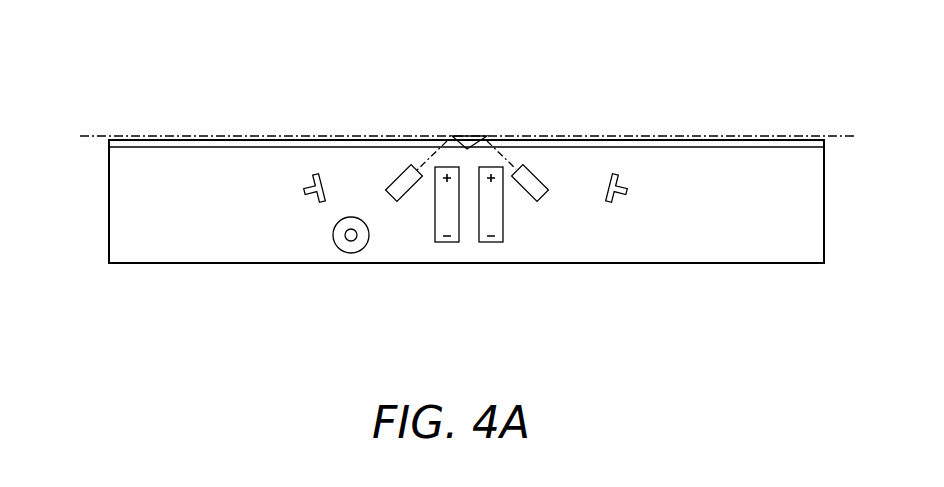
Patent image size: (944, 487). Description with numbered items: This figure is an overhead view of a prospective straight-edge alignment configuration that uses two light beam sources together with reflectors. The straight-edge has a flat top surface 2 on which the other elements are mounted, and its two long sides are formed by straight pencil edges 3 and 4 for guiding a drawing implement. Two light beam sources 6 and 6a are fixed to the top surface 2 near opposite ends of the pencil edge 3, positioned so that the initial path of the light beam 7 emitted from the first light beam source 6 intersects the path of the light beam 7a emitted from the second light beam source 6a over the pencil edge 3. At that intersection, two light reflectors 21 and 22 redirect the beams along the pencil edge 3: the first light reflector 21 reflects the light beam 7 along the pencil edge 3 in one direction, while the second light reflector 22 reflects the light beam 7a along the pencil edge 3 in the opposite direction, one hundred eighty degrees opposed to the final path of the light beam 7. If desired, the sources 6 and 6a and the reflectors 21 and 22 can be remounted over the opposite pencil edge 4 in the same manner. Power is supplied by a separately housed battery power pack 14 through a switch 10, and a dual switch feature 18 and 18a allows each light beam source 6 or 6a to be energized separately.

The flat top surface 2 is at (160, 222).
The pencil edge 3 is at (200, 137).
The pencil edge 4 is at (767, 264).
The first light beam source 6 is at (537, 200).
The second light beam source 6a is at (394, 200).
The light beam 7 is at (552, 137).
The light beam 7a is at (352, 137).
The switch 10 is at (351, 241).
The battery power pack 14 is at (490, 242).
The dual switch feature 18 is at (627, 187).
The dual switch feature 18a is at (304, 188).
The first light reflector 21 is at (498, 137).
The second light reflector 22 is at (438, 137).